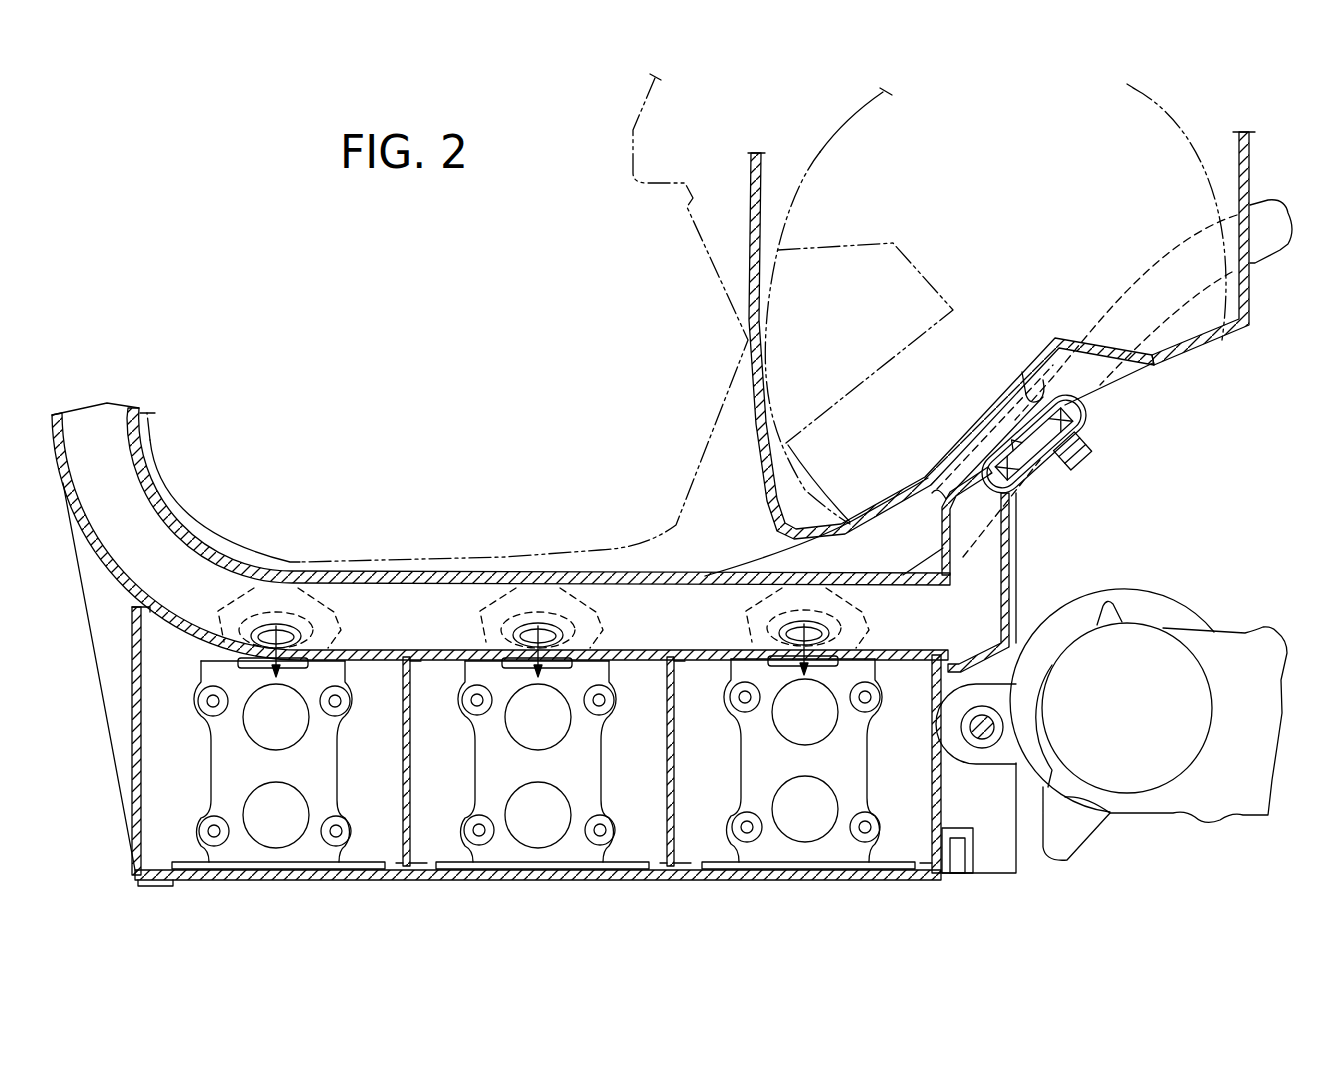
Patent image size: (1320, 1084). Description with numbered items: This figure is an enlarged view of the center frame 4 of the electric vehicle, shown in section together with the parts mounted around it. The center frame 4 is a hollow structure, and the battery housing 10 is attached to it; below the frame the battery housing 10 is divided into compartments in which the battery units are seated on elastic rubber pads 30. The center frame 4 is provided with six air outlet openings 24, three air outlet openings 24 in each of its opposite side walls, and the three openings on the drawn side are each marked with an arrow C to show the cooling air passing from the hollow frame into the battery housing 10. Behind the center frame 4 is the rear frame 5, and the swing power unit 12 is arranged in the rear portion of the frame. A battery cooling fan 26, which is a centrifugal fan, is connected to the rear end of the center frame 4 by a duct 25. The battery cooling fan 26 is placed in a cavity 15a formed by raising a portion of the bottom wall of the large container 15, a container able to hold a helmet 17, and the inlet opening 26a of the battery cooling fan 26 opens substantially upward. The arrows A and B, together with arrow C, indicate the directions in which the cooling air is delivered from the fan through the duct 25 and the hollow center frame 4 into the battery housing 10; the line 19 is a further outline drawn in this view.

The center frame 4 is at (395, 580).
The rear frame 5 is at (1262, 258).
The battery housing 10 is at (533, 878).
The swing power unit 12 is at (1243, 817).
The large container 15 is at (765, 224).
The cavity 15a is at (1040, 368).
The helmet 17 is at (816, 150).
The fender 19 is at (505, 553).
The air outlet openings 24 is at (262, 627).
The duct 25 is at (1007, 563).
The battery cooling fan 26 is at (1078, 448).
The inlet opening 26a is at (993, 401).
The elastic rubber pads 30 is at (330, 847).
The arrow A is at (1049, 372).
The arrow B is at (982, 572).
The arrow C is at (282, 626).